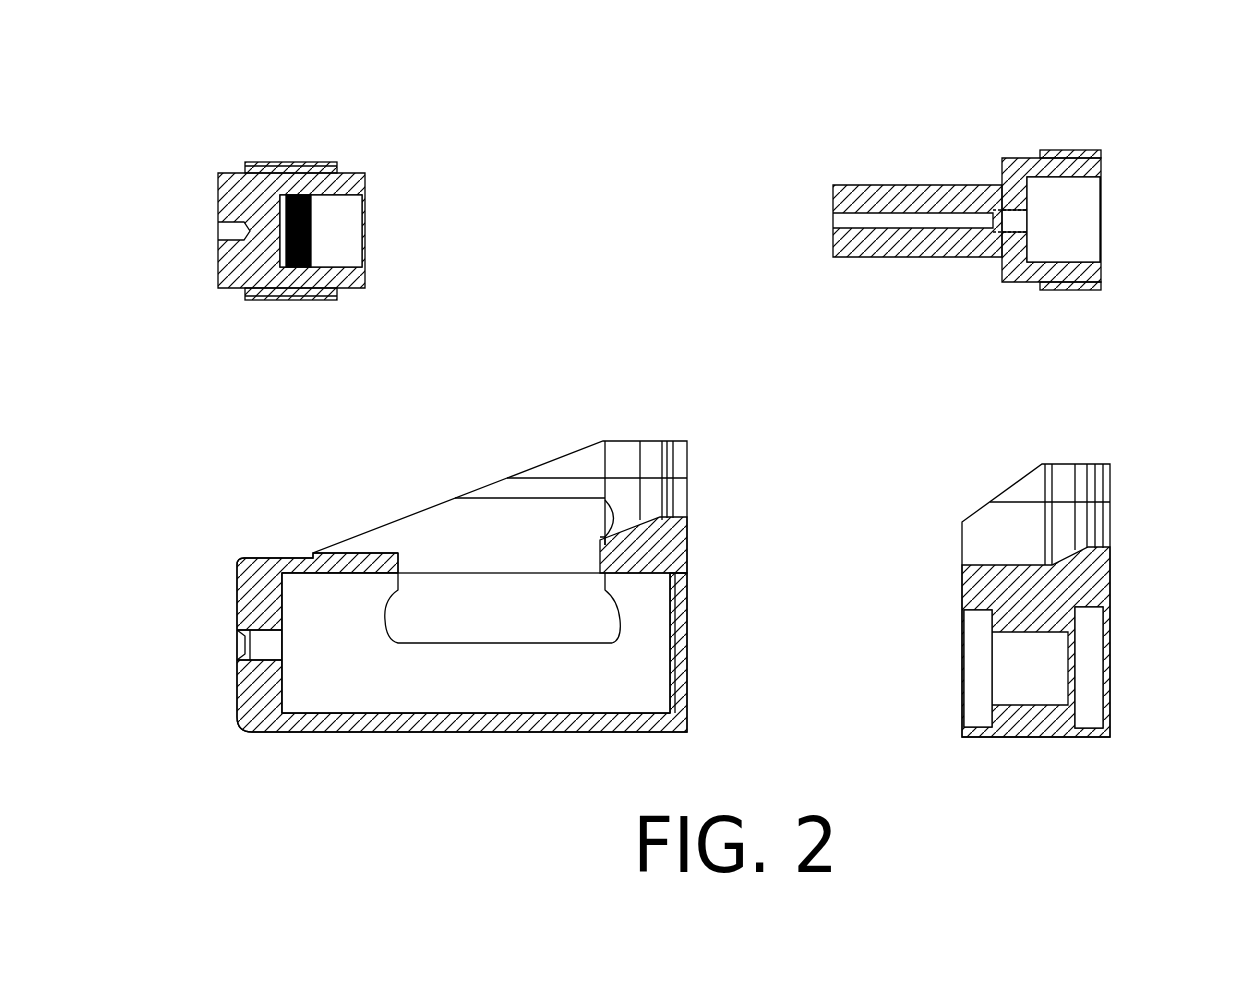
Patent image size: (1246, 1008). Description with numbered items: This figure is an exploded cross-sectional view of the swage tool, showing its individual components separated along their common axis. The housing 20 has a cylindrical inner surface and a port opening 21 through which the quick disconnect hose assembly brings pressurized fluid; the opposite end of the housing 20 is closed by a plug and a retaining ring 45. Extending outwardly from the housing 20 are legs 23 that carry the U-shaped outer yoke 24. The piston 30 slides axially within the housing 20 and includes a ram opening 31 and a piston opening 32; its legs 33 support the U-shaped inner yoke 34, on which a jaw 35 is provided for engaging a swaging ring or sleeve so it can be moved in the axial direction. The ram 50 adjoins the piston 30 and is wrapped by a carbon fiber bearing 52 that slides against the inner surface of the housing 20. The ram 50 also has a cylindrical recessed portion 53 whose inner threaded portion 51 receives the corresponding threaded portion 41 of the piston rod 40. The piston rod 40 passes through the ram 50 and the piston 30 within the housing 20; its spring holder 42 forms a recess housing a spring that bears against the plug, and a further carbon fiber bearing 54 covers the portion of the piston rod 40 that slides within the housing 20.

The housing 20 is at (462, 621).
The port opening 21 is at (236, 640).
The legs 23 is at (511, 462).
The outer yoke 24 is at (690, 464).
The retaining ring 45 is at (690, 640).
The piston 30 is at (1038, 638).
The ram opening 31 is at (958, 673).
The piston opening 32 is at (1114, 673).
The legs 33 is at (986, 498).
The inner yoke 34 is at (1114, 498).
The jaw 35 is at (1087, 466).
The piston rod 40 is at (1005, 220).
The threaded portion 41 is at (857, 180).
The spring holder 42 is at (1072, 218).
The carbon fiber bearing 54 is at (1066, 150).
The ram 50 is at (311, 244).
The inner threaded portion 51 is at (301, 277).
The carbon fiber bearing 52 is at (299, 152).
The recessed portion 53 is at (336, 240).